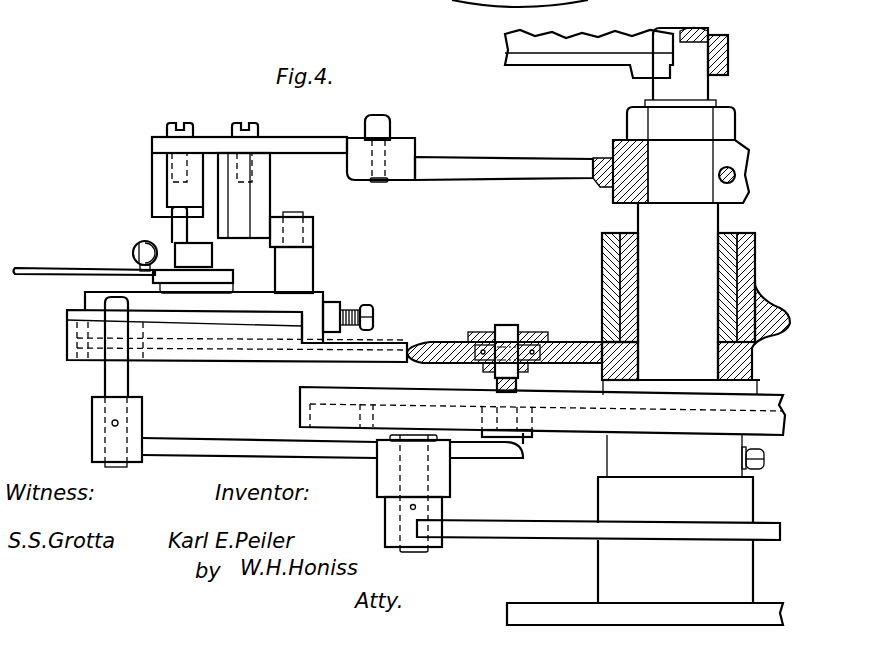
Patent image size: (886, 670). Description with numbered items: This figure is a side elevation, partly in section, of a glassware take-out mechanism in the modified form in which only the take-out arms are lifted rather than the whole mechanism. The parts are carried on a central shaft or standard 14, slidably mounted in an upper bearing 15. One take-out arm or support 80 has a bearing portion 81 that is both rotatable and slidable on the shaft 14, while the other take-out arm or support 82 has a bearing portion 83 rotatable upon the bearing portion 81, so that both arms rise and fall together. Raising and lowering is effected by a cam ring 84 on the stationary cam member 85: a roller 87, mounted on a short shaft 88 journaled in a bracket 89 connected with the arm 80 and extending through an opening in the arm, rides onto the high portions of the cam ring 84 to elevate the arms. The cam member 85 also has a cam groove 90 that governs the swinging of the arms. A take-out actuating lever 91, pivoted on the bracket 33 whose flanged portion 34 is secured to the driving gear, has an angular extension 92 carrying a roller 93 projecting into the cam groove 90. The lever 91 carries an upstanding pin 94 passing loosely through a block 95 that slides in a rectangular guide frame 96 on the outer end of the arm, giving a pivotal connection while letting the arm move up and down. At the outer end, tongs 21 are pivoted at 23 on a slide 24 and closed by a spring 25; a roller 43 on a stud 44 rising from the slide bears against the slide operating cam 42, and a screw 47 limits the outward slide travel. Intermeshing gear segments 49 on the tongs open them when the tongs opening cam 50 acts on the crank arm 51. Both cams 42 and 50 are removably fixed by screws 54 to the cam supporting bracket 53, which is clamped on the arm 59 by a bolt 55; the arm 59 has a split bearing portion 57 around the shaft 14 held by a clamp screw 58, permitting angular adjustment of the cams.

The shaft or standard 14 is at (708, 90).
The upper bearing 15 is at (597, 34).
The tongs 21 is at (36, 268).
The pivot 23 is at (200, 260).
The slide 24 is at (313, 305).
The spring 25 is at (132, 252).
The bracket 33 is at (528, 520).
The flanged portion 34 is at (544, 602).
The slide operating cam 42 is at (270, 200).
The roller 43 is at (313, 232).
The stud 44 is at (313, 263).
The screw 47 is at (373, 311).
The gear segments 49 is at (220, 281).
The tongs opening cam 50 is at (167, 194).
The crank arm 51 is at (170, 228).
The cam supporting bracket 53 is at (303, 138).
The screws 54 is at (242, 123).
The bolt 55 is at (379, 117).
The split bearing portion 57 is at (735, 146).
The clamp screw 58 is at (736, 176).
The arm 59 is at (497, 157).
The take-out arm or support 80 is at (585, 342).
The bearing portion 81 is at (620, 252).
The take-out arm or support 82 is at (785, 318).
The bearing portion 83 is at (757, 243).
The cam ring 84 is at (497, 386).
The stationary cam member 85 is at (300, 408).
The roller 87 is at (508, 325).
The short shaft 88 is at (540, 362).
The bracket 89 is at (481, 332).
The cam groove 90 is at (340, 424).
The take-out actuating lever 91 is at (210, 457).
The angular extension 92 is at (480, 458).
The roller 93 is at (532, 438).
The upstanding pin 94 is at (128, 381).
The block 95 is at (95, 366).
The rectangular guide frame 96 is at (213, 362).